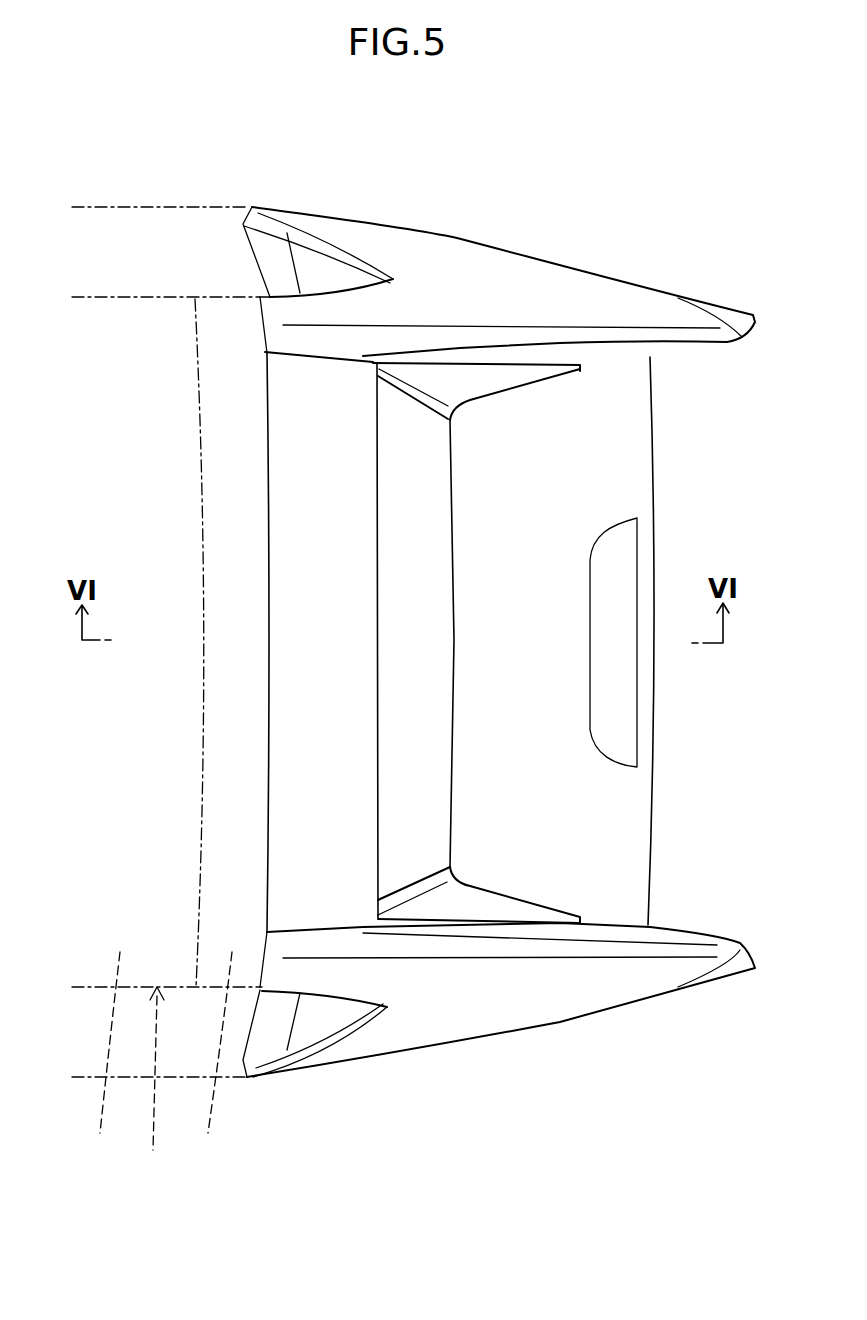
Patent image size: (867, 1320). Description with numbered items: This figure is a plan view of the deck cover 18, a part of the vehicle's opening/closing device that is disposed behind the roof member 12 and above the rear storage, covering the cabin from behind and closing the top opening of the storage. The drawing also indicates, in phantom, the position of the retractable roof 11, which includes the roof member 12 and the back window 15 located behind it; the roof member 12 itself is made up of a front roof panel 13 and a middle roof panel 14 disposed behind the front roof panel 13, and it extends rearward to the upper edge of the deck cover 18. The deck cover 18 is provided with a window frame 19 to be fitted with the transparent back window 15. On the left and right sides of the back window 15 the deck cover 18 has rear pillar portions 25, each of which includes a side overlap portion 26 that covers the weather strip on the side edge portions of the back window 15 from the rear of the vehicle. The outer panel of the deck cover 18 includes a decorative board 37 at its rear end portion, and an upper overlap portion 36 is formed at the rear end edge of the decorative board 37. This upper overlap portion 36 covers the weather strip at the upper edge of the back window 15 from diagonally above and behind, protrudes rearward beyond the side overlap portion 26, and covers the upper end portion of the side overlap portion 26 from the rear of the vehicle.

The retractable roof 11 is at (185, 266).
The roof member 12 is at (155, 1088).
The front roof panel 13 is at (101, 1062).
The middle roof panel 14 is at (211, 1062).
The back window 15 is at (425, 495).
The deck cover 18 is at (457, 238).
The window frame 19 is at (455, 708).
The rear pillar portion 25 is at (508, 385).
The side overlap portion 26 is at (418, 396).
The upper overlap portion 36 is at (378, 468).
The decorative board 37 is at (310, 383).